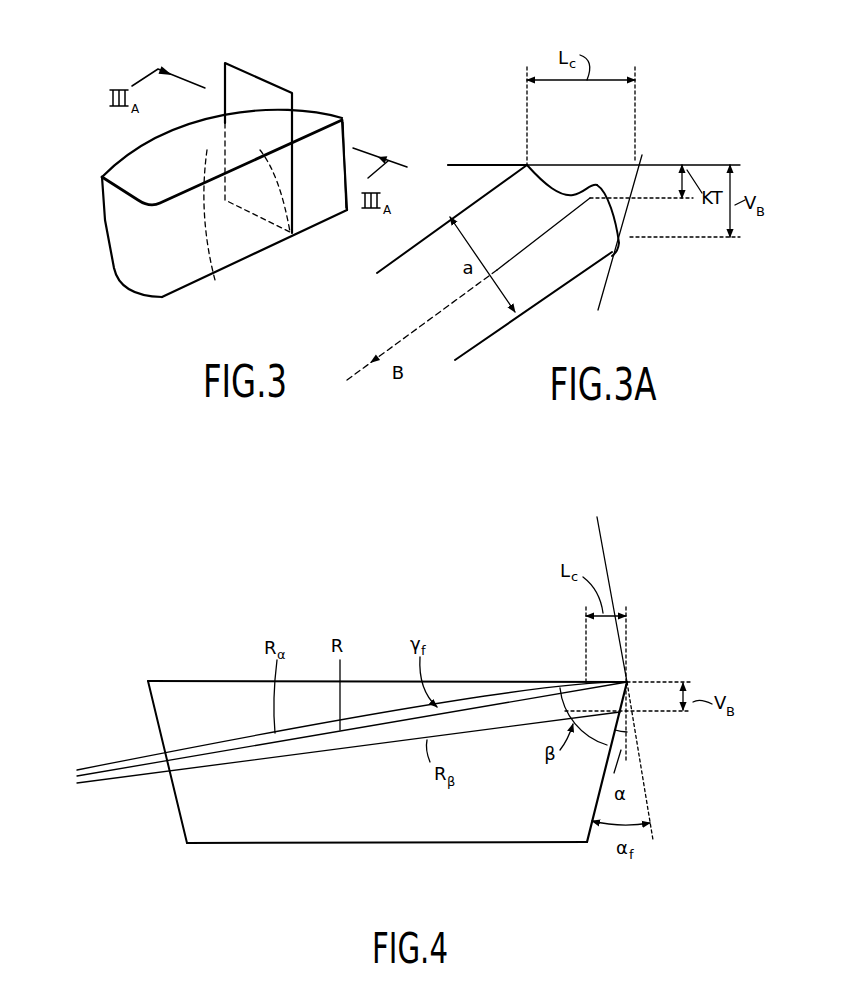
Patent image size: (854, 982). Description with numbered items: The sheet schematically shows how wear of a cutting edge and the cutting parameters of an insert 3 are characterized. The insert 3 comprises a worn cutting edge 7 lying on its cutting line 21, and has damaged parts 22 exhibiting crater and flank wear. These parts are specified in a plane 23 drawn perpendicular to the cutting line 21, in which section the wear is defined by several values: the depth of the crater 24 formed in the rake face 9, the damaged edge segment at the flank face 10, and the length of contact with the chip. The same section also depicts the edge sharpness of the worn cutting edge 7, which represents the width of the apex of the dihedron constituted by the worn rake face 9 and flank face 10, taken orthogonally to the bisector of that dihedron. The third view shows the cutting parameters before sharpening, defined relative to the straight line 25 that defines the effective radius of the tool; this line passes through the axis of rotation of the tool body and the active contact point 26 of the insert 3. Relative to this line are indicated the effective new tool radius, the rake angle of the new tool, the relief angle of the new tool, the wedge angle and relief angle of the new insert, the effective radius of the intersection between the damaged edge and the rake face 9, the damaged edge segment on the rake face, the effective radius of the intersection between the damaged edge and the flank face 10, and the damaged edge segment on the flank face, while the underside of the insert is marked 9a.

In FIG. 3, the insert 3 is at (157, 173).
In FIG. 3A, the insert 3 is at (500, 246).
In FIG. 4, the insert 3 is at (358, 798).
In FIG. 3, the worn cutting edge 7 is at (207, 150).
In FIG. 3, the rake face 9 is at (258, 142).
In FIG. 3A, the rake face 9 is at (492, 158).
In FIG. 4, the rake face 9 is at (560, 677).
In FIG. 4, the bottom face 9a is at (498, 846).
In FIG. 3, the flank face 10 is at (263, 198).
In FIG. 3A, the flank face 10 is at (619, 257).
In FIG. 4, the flank face 10 is at (637, 737).
In FIG. 3, the cutting line 21 is at (318, 120).
In FIG. 3A, the cutting line 21 is at (641, 160).
In FIG. 3, the damaged parts 22 is at (330, 215).
In FIG. 3A, the damaged parts 22 is at (603, 130).
In FIG. 3, the plane 23 is at (233, 87).
In FIG. 3A, the crater 24 is at (566, 182).
In FIG. 4, the straight line 25 is at (127, 763).
In FIG. 4, the active contact point 26 is at (630, 679).